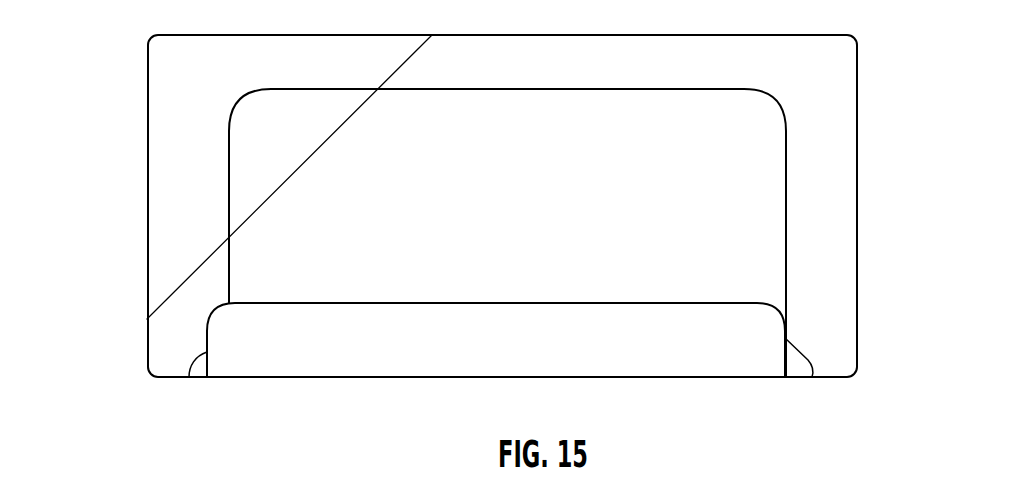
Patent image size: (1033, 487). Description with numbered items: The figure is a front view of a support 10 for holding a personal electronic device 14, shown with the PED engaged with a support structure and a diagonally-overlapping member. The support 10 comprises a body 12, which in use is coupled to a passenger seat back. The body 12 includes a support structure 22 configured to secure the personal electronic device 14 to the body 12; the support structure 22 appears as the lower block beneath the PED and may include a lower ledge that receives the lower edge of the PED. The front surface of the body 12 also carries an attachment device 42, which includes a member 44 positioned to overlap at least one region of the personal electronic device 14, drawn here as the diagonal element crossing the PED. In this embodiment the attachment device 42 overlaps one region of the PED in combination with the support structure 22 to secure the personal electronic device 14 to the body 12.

The support 10 is at (124, 55).
The body 12 is at (192, 193).
The personal electronic device 14 is at (718, 248).
The support structure 22 is at (714, 353).
The attachment device 42 is at (188, 281).
The member 44 is at (177, 244).